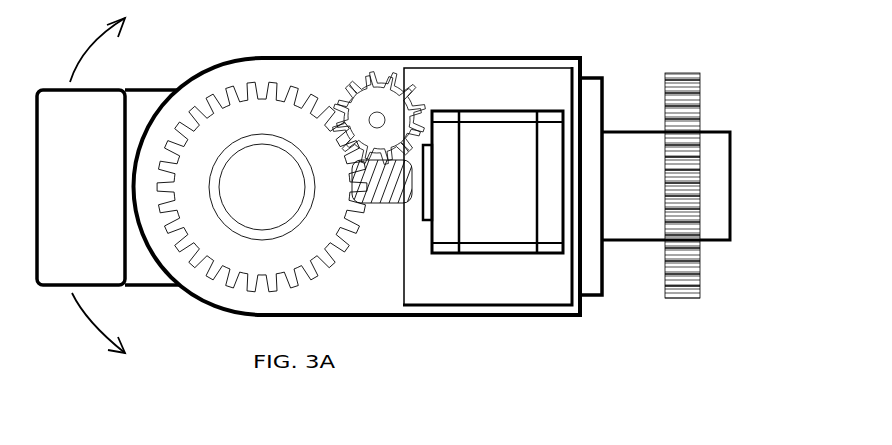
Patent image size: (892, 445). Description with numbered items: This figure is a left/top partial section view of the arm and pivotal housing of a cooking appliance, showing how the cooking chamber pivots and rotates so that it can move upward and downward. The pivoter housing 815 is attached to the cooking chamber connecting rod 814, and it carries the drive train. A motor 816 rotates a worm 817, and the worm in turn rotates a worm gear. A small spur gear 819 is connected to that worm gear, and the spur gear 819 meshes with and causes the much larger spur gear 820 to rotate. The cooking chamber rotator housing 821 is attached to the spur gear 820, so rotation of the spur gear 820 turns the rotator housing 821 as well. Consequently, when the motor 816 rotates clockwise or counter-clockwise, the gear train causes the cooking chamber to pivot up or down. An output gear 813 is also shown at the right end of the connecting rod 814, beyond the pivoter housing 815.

The output gear 813 is at (690, 100).
The cooking chamber connecting rod 814 is at (597, 100).
The pivoter housing 815 is at (488, 65).
The motor 816 is at (448, 132).
The worm 817 is at (393, 182).
The spur gear 819 is at (385, 97).
The spur gear 820 is at (316, 137).
The cooking chamber rotator housing 821 is at (253, 168).